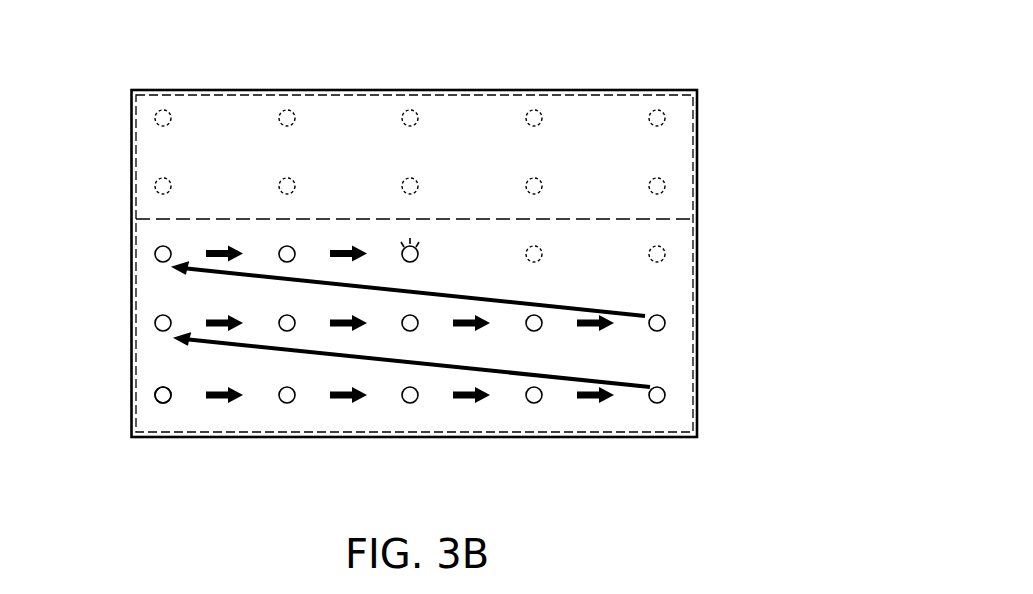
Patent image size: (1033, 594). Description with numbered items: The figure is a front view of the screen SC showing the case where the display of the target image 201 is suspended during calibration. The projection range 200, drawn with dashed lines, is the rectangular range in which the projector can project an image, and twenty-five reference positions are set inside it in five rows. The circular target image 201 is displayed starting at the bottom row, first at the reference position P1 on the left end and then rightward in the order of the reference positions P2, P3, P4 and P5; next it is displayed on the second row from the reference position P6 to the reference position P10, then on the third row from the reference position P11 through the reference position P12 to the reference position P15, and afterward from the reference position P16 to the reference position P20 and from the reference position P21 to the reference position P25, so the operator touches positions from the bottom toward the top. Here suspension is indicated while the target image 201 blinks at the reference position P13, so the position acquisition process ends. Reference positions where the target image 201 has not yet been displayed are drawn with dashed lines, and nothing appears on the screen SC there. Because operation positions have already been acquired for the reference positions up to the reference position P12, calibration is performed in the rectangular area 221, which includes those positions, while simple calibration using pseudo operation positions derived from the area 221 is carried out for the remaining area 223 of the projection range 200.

The projection range 200 is at (680, 97).
The target image 201 is at (170, 400).
The area 221 is at (673, 247).
The area 223 is at (680, 198).
The screen SC is at (697, 266).
The reference position P1 is at (162, 406).
The reference position P2 is at (286, 406).
The reference position P3 is at (409, 406).
The reference position P4 is at (533, 406).
The reference position P5 is at (656, 406).
The reference position P6 is at (154, 333).
The reference position P10 is at (667, 334).
The reference position P11 is at (154, 264).
The reference position P12 is at (290, 246).
The reference position P13 is at (420, 248).
The reference position P15 is at (667, 266).
The reference position P16 is at (154, 196).
The reference position P20 is at (668, 182).
The reference position P21 is at (153, 129).
The reference position P25 is at (647, 115).